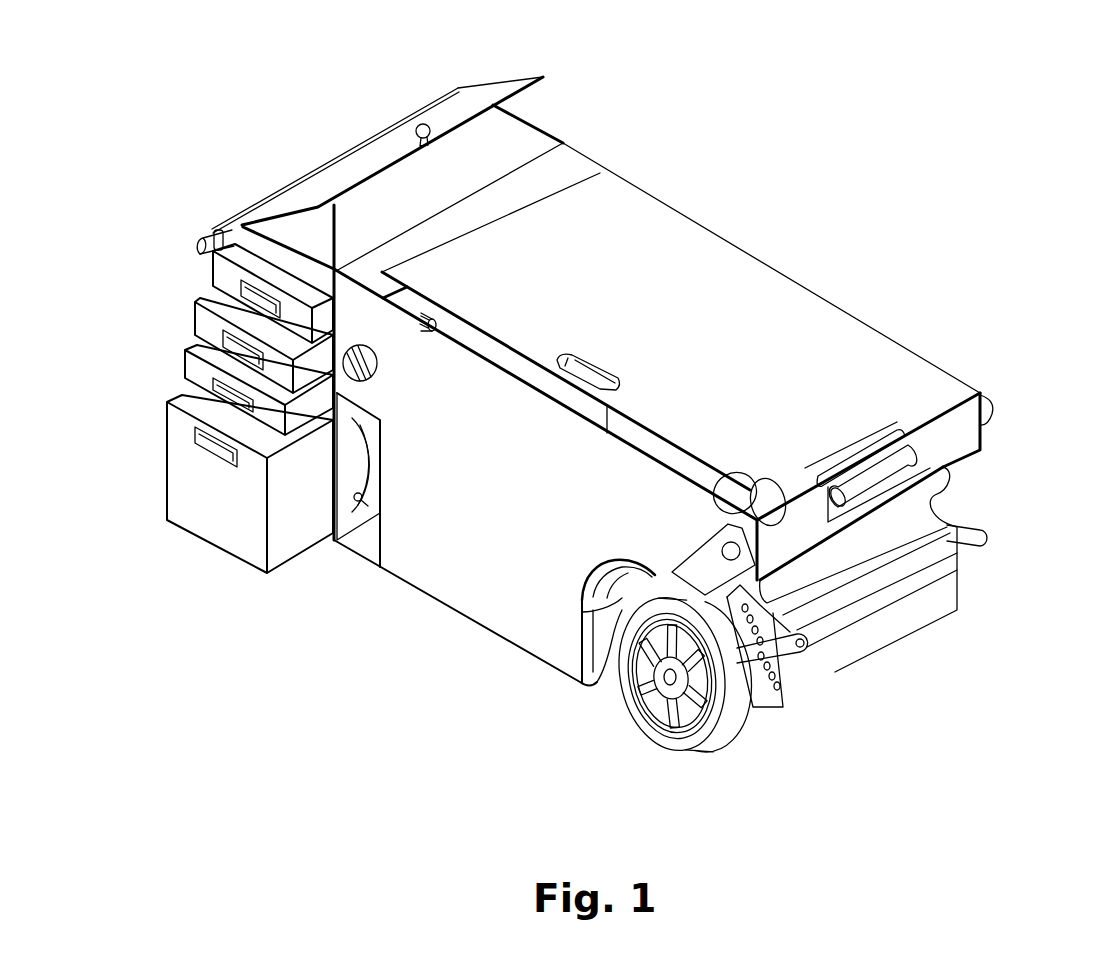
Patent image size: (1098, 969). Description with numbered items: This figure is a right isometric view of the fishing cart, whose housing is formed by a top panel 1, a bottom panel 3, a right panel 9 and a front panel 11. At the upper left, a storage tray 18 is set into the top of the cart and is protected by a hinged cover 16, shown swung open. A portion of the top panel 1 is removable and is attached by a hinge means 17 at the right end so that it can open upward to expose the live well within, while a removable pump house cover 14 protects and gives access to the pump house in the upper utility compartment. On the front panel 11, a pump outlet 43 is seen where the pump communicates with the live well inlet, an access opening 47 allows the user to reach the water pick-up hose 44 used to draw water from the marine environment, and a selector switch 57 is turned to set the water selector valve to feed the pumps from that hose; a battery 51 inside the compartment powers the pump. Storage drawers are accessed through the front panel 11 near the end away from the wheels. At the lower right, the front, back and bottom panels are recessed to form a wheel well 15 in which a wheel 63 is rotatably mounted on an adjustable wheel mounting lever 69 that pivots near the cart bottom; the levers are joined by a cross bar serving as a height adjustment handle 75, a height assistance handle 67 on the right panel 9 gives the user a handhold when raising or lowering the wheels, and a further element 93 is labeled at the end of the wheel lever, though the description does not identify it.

The top panel 1 is at (727, 263).
The bottom panel 3 is at (517, 650).
The right panel 9 is at (950, 597).
The front panel 11 is at (490, 603).
The pump house cover 14 is at (570, 166).
The wheel well 15 is at (600, 635).
The hinged cover 16 is at (470, 97).
The hinge means 17 is at (990, 393).
The storage tray 18 is at (500, 147).
The pump outlet 43 is at (363, 347).
The pick-up hose 44 is at (357, 503).
The access opening 47 is at (375, 525).
The battery 51 is at (760, 653).
The selector switch 57 is at (334, 470).
The wheel 63 is at (731, 735).
The height assistance handle 67 is at (905, 462).
The adjustable wheel mounting lever 69 is at (787, 647).
The height adjustment handle 75 is at (880, 597).
The pin 93 is at (803, 645).